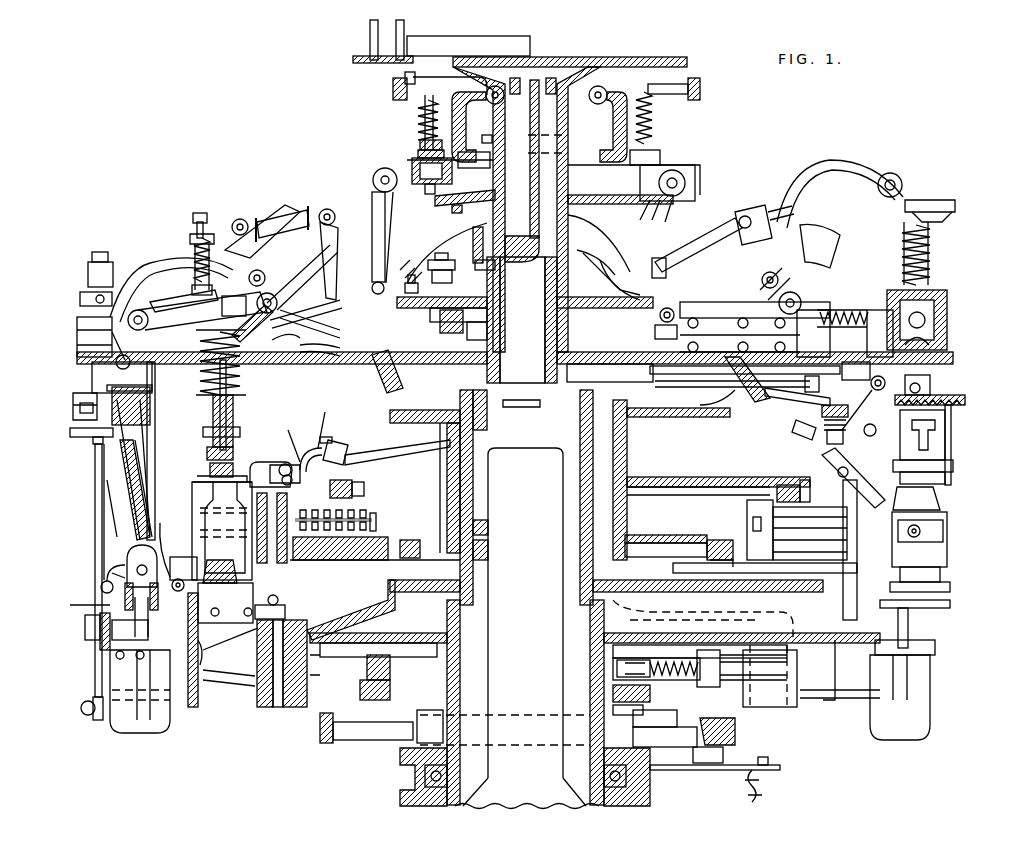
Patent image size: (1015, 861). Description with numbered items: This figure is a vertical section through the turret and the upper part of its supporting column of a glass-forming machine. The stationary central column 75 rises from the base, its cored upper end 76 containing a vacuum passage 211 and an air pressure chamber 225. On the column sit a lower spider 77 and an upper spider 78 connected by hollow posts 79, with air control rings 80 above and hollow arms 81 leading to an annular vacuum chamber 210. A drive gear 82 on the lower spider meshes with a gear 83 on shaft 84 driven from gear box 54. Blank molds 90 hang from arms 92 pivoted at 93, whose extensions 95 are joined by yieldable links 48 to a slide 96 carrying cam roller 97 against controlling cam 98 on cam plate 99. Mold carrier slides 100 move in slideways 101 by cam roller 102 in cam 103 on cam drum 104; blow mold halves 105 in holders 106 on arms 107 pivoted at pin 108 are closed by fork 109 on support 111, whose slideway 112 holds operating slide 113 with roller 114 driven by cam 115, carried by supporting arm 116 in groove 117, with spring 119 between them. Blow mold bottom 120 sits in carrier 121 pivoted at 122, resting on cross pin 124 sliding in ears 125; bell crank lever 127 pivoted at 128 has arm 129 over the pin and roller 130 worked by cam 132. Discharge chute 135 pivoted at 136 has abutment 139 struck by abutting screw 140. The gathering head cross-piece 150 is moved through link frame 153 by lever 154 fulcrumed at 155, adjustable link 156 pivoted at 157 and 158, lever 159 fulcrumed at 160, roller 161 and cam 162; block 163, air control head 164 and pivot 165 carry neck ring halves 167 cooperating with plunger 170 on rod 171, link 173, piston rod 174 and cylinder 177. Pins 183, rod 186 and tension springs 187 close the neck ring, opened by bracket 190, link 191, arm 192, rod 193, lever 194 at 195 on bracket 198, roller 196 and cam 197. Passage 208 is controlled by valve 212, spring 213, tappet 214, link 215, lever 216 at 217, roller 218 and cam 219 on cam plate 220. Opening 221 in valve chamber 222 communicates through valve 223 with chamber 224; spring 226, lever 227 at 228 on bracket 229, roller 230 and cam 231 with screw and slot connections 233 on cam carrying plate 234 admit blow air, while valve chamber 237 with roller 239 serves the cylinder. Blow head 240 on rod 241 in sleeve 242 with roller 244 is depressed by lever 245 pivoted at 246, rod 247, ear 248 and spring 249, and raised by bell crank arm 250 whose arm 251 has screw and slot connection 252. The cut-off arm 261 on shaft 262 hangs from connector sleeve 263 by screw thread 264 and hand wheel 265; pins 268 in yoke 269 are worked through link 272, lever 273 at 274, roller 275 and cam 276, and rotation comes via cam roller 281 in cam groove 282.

The yieldable links 48 is at (685, 680).
The gear box 54 is at (760, 792).
The stationary central column 75 is at (475, 770).
The upper end of central column 76 is at (720, 300).
The lower spider 77 is at (385, 598).
The upper spider 78 is at (435, 364).
The posts 79 is at (156, 448).
The air control rings 80 is at (445, 208).
The arms 81 is at (445, 240).
The drive gear 82 is at (738, 730).
The gear 83 is at (700, 770).
The shaft 84 is at (720, 760).
The blank molds 90 is at (115, 725).
The arms 92 is at (210, 680).
The pivot 93 is at (273, 708).
The arm extensions 95 is at (745, 690).
The slide 96 is at (318, 705).
The cam roller 97 is at (392, 664).
The controlling cam 98 is at (392, 690).
The cam plate 99 is at (405, 730).
The mold carrier slides 100 is at (388, 520).
The slideways 101 is at (345, 585).
The cam roller 102 is at (462, 548).
The cam 103 is at (465, 522).
The cam drum 104 is at (452, 500).
The blow mold halves 105 is at (950, 568).
The holders 106 is at (945, 522).
The arms 107 is at (945, 532).
The pivot pin 108 is at (268, 475).
The fork 109 is at (812, 492).
The support 111 is at (752, 522).
The slideway 112 is at (290, 493).
The operating slide 113 is at (376, 510).
The cam roller 114 is at (352, 490).
The cam 115 is at (407, 493).
The supporting arm 116 is at (420, 448).
The groove 117 is at (564, 470).
The spring 119 is at (312, 480).
The blow mold bottom 120 is at (238, 548).
The carrier 121 is at (235, 616).
The pivot 122 is at (278, 600).
The cross pin 124 is at (235, 640).
The ears 125 is at (265, 612).
The bell crank lever 127 is at (327, 420).
The pivot 128 is at (300, 448).
The arm 129 is at (292, 445).
The cam roller 130 is at (350, 448).
The cam 132 is at (340, 437).
The discharge chute 135 is at (205, 700).
The pivot 136 is at (183, 578).
The abutment 139 is at (195, 703).
The abutting screw 140 is at (166, 563).
The cross-piece 150 is at (105, 565).
The link frame 153 is at (112, 372).
The lever 154 is at (860, 148).
The fulcrum pivot 155 is at (838, 255).
The adjustable link 156 is at (285, 205).
The pivot 157 is at (242, 218).
The pivot 158 is at (323, 210).
The lever 159 is at (325, 244).
The fulcrum 160 is at (725, 318).
The cam roller 161 is at (738, 412).
The cam 162 is at (730, 425).
The block 163 is at (112, 576).
The air control head 164 is at (70, 605).
The pivot 165 is at (85, 620).
The neck ring halves 167 is at (100, 640).
The plunger 170 is at (118, 660).
The rod 171 is at (125, 598).
The link 173 is at (127, 552).
The piston rod 174 is at (122, 518).
The cylinder 177 is at (80, 406).
The pins 183 is at (955, 445).
The rod 186 is at (965, 412).
The tension springs 187 is at (935, 392).
The bracket 190 is at (855, 370).
The link 191 is at (867, 442).
The arm 192 is at (822, 428).
The rod 193 is at (790, 410).
The lever 194 is at (735, 372).
The fulcrum pivot 195 is at (657, 320).
The cam roller 196 is at (740, 385).
The cam 197 is at (648, 378).
The bracket 198 is at (298, 338).
The passage 208 is at (868, 310).
The annular chamber 210 is at (570, 295).
The passage 211 is at (515, 248).
The valve 212 is at (940, 318).
The spring 213 is at (932, 258).
The tappet 214 is at (915, 195).
The link 215 is at (752, 208).
The lever 216 is at (688, 198).
The pivot 217 is at (690, 183).
The cam roller 218 is at (690, 265).
The cam 219 is at (440, 258).
The cam plate 220 is at (495, 302).
The opening 221 is at (416, 155).
The valve chamber 222 is at (418, 144).
The valve 223 is at (428, 192).
The chamber 224 is at (410, 172).
The chamber 225 is at (552, 100).
The spring 226 is at (418, 120).
The lever 227 is at (440, 82).
The pivot 228 is at (470, 105).
The bracket 229 is at (484, 140).
The cam roller 230 is at (392, 88).
The cam 231 is at (385, 64).
The screw and slot connection 233 is at (368, 40).
The cam carrying plate 234 is at (412, 58).
The valve chamber 237 is at (655, 148).
The cam roller 239 is at (700, 90).
The blow head 240 is at (240, 466).
The rod 241 is at (240, 425).
The sleeve 242 is at (203, 430).
The cam roller 244 is at (245, 312).
The lever 245 is at (195, 300).
The pivot 246 is at (148, 312).
The rod 247 is at (220, 208).
The ear 248 is at (190, 236).
The spring 249 is at (192, 288).
The bell crank arm 250 is at (832, 285).
The bell crank arm 251 is at (265, 278).
The screw and slot connection 252 is at (270, 232).
The arm 261 is at (85, 710).
The shaft 262 is at (95, 503).
The connector sleeve 263 is at (92, 385).
The screw thread 264 is at (95, 443).
The hand wheel 265 is at (70, 432).
The pins 268 is at (80, 300).
The yoke 269 is at (120, 255).
The link 272 is at (305, 305).
The lever 273 is at (378, 232).
The pivot 274 is at (373, 182).
The cam roller 275 is at (376, 265).
The cam 276 is at (500, 290).
The cam roller 281 is at (465, 343).
The cam groove 282 is at (470, 316).